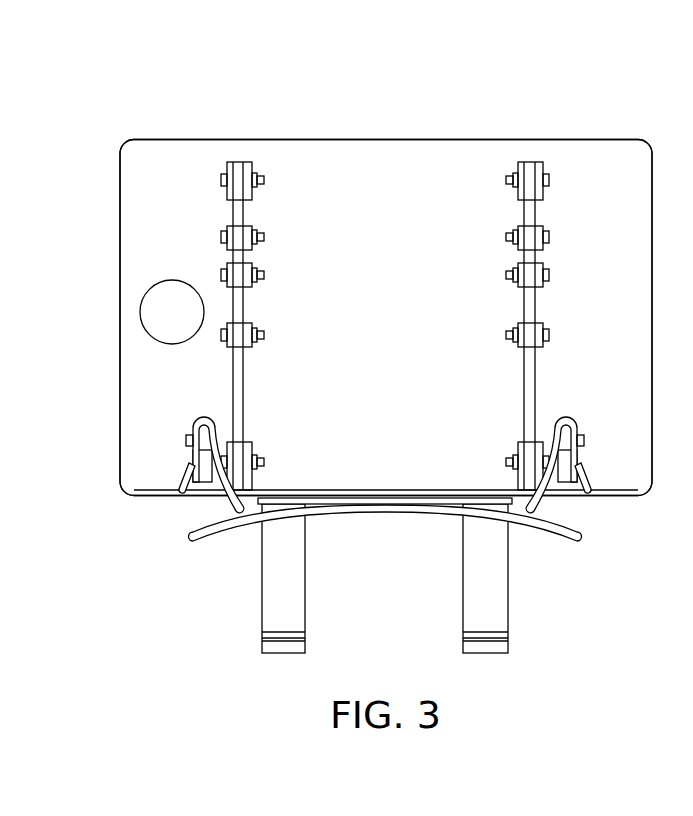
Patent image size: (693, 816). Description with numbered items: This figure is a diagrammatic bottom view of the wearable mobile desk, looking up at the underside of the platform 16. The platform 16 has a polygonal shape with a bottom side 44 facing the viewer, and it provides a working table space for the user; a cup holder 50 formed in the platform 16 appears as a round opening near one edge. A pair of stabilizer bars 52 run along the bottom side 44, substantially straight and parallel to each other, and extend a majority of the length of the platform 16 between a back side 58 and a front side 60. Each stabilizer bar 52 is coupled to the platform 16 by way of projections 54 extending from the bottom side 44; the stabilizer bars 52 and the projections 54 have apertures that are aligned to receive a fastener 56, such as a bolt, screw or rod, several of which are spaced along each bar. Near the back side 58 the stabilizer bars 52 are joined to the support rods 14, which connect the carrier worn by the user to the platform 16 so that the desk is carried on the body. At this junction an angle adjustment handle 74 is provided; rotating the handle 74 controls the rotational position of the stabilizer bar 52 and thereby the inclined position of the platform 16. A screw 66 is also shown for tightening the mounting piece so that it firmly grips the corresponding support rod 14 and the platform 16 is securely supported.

The support rods 14 is at (236, 506).
The platform 16 is at (163, 139).
The bottom side 44 is at (388, 155).
The cup holder 50 is at (146, 300).
The stabilizer bars 52 is at (244, 387).
The projections 54 is at (264, 178).
The fastener 56 is at (220, 237).
The back side 58 is at (392, 499).
The front side 60 is at (438, 139).
The screw 66 is at (186, 440).
The angle adjustment handle 74 is at (180, 471).